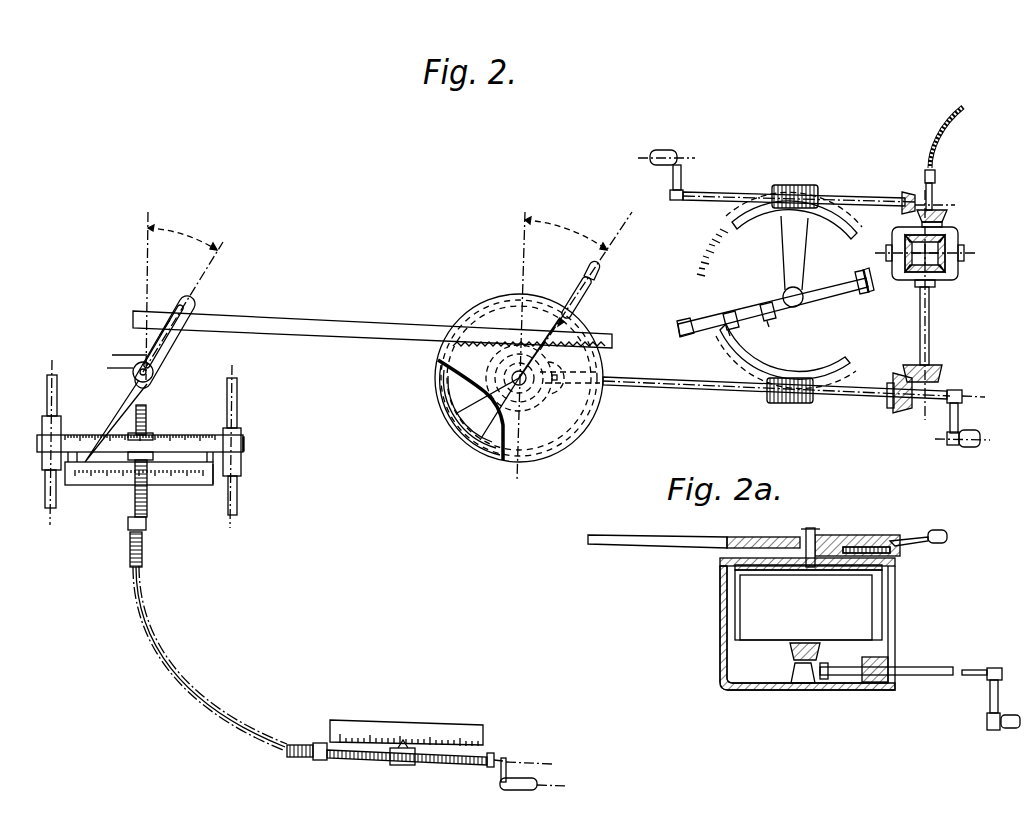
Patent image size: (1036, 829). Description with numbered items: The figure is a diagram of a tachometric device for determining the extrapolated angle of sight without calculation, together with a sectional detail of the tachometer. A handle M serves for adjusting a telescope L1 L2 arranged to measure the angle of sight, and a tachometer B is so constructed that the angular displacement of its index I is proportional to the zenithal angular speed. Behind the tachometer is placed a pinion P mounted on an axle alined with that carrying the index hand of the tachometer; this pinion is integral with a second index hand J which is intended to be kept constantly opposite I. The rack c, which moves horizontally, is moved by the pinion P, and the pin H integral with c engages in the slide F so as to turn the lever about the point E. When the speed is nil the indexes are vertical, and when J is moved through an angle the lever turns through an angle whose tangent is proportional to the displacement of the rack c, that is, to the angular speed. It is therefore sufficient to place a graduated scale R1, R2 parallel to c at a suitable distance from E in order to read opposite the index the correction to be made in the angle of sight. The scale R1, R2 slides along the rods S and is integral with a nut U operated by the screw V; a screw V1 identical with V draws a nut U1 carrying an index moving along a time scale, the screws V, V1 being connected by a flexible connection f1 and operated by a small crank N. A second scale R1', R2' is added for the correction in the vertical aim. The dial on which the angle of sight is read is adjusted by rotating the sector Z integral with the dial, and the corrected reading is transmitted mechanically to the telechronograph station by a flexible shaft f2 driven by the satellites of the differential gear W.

In FIG. 2, the slide of lever F is at (140, 363).
In FIG. 2, the pin H is at (177, 340).
In FIG. 2, the pivot point of lever E is at (122, 376).
In FIG. 2, the rack c is at (376, 322).
In FIG. 2A, the rack c is at (657, 531).
In FIG. 2, the rods S is at (142, 444).
In FIG. 2, the graduated scale R1 is at (123, 441).
In FIG. 2, the graduated scale R2 is at (261, 453).
In FIG. 2, the second scale R1' is at (137, 483).
In FIG. 2, the second scale R2' is at (206, 489).
In FIG. 2, the nut U is at (149, 432).
In FIG. 2, the screw V is at (146, 495).
In FIG. 2, the flexible connection f1 is at (228, 646).
In FIG. 2, the nut with index U1 is at (406, 756).
In FIG. 2, the screw V1 is at (407, 767).
In FIG. 2, the small crank N is at (534, 777).
In FIG. 2, the tachometer B is at (520, 347).
In FIG. 2A, the tachometer B is at (807, 636).
In FIG. 2, the pinion P is at (735, 409).
In FIG. 2A, the pinion P is at (890, 572).
In FIG. 2, the index of tachometer I is at (541, 342).
In FIG. 2A, the index of tachometer I is at (848, 535).
In FIG. 2, the second index hand J is at (581, 289).
In FIG. 2A, the second index hand J is at (918, 521).
In FIG. 2, the sector Z is at (776, 276).
In FIG. 2, the telescope L1 is at (770, 317).
In FIG. 2, the telescope L2 is at (875, 281).
In FIG. 2, the differential gear W is at (933, 305).
In FIG. 2, the flexible shaft f2 is at (950, 158).
In FIG. 2, the handle M is at (962, 434).
In FIG. 2A, the handle M is at (923, 693).